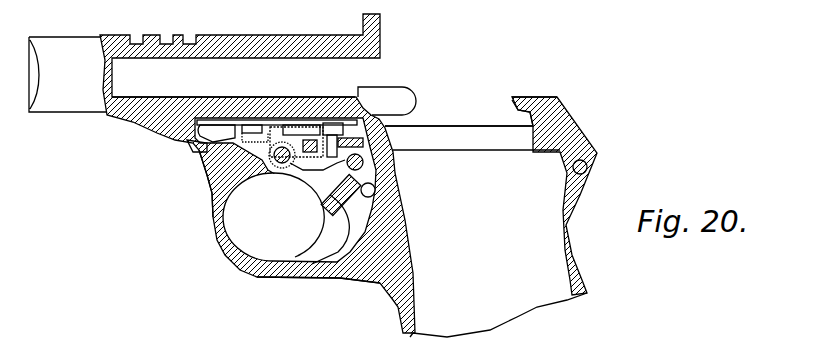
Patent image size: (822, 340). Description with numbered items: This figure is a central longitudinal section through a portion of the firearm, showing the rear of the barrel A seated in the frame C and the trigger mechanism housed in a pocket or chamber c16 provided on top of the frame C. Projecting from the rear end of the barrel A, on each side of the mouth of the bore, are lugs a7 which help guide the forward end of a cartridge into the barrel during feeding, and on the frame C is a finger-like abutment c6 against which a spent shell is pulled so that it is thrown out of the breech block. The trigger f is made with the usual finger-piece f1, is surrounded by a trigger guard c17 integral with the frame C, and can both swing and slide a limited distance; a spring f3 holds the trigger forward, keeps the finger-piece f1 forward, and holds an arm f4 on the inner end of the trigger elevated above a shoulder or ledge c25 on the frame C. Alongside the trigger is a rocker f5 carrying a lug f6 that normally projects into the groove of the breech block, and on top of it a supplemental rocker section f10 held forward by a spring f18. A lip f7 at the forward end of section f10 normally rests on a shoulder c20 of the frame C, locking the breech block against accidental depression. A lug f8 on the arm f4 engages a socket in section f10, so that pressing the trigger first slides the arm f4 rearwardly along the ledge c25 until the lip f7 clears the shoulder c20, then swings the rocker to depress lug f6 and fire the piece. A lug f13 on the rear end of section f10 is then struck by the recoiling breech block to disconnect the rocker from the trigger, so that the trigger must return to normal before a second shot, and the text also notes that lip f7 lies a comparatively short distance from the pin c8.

The barrel A is at (68, 74).
The frame C is at (348, 175).
The lugs a7 is at (407, 97).
The pin c8 is at (457, 130).
The finger-like abutment c6 is at (522, 97).
The shoulder or ledge c25 is at (188, 114).
The arm f4 is at (213, 124).
The lug f8 is at (247, 125).
The lug f6 is at (258, 132).
The rocker f5 is at (275, 132).
The supplemental rocker section f10 is at (292, 130).
The spring f18 is at (348, 123).
The lip f7 is at (195, 144).
The shoulder or ledge c20 is at (211, 185).
The pocket or chamber c16 is at (282, 170).
The trigger f is at (315, 170).
The lug f13 is at (327, 172).
The finger-piece f1 is at (313, 245).
The trigger guard c17 is at (323, 277).
The spring f3 is at (390, 173).